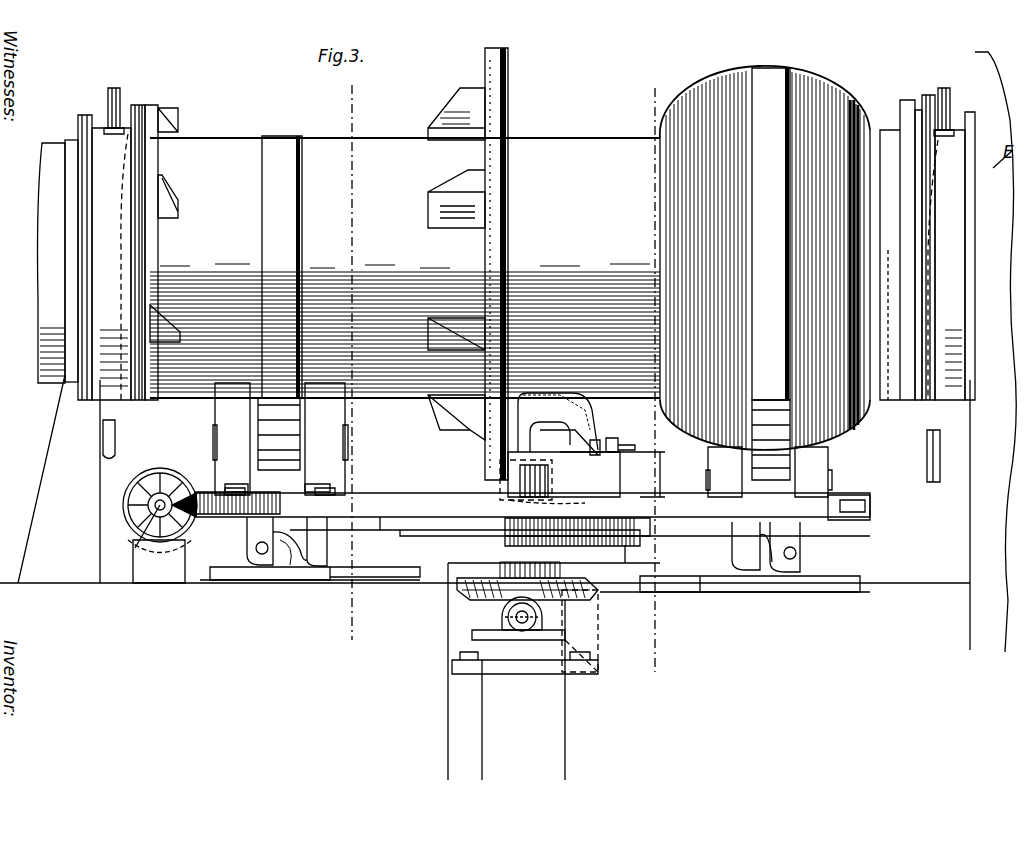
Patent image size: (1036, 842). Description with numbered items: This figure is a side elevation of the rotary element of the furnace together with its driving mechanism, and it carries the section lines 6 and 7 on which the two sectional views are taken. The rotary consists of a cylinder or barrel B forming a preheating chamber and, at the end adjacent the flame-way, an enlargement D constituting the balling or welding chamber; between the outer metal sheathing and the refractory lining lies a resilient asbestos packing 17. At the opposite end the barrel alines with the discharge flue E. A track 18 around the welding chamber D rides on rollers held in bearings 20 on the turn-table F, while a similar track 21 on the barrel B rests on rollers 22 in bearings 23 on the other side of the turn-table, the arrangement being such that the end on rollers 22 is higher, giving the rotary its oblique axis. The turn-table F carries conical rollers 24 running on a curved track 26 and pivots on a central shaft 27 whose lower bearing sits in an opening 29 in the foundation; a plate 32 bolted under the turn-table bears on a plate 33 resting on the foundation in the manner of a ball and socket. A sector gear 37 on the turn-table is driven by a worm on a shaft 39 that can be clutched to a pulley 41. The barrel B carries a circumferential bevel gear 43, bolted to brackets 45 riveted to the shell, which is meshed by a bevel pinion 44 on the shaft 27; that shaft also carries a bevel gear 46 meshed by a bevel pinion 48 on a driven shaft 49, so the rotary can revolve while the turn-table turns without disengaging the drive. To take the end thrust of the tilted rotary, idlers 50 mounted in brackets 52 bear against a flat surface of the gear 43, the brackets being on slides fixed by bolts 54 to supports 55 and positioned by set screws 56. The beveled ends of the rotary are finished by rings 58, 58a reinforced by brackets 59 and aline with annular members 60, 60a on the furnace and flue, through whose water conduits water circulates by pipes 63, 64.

The section line 6— 6 is at (654, 370).
The section line 7— 7 is at (351, 364).
The rotary cylinder or barrel B is at (405, 268).
The enlargement constituting balling or welding chamber D is at (730, 120).
The discharge flue E is at (45, 244).
The turn-table F is at (420, 515).
The spongy or resilient packing or filler 17 is at (778, 452).
The track 18 is at (775, 90).
The bearings 20 is at (718, 447).
The track 21 is at (272, 136).
The rollers 22 is at (285, 400).
The bearings 23 is at (235, 392).
The conical rollers 24 is at (290, 565).
The curved track 26 is at (820, 555).
The central shaft 27 is at (547, 509).
The opening 29 is at (460, 603).
The plate 32 is at (626, 520).
The plate 33 is at (625, 565).
The sector gear 37 is at (206, 490).
The shaft 39 is at (146, 544).
The pulley 41 is at (158, 470).
The circumferential bevel gear 43 is at (490, 78).
The bevel pinion 44 is at (555, 486).
The brackets 45 is at (450, 112).
The bevel gear 46 is at (560, 640).
The bevel pinion 48 is at (500, 600).
The shaft 49 is at (505, 620).
The idlers 50 is at (545, 395).
The brackets 52 is at (578, 412).
The bolts 54 is at (178, 122).
The supports 55 is at (655, 454).
The set screws 56 is at (618, 440).
The ring 58 is at (908, 105).
The ring 58a is at (143, 112).
The brackets 59 is at (885, 112).
The annular member 60 is at (936, 130).
The annular member 60a is at (103, 118).
The pipe 63 is at (103, 96).
The pipe 64 is at (108, 427).